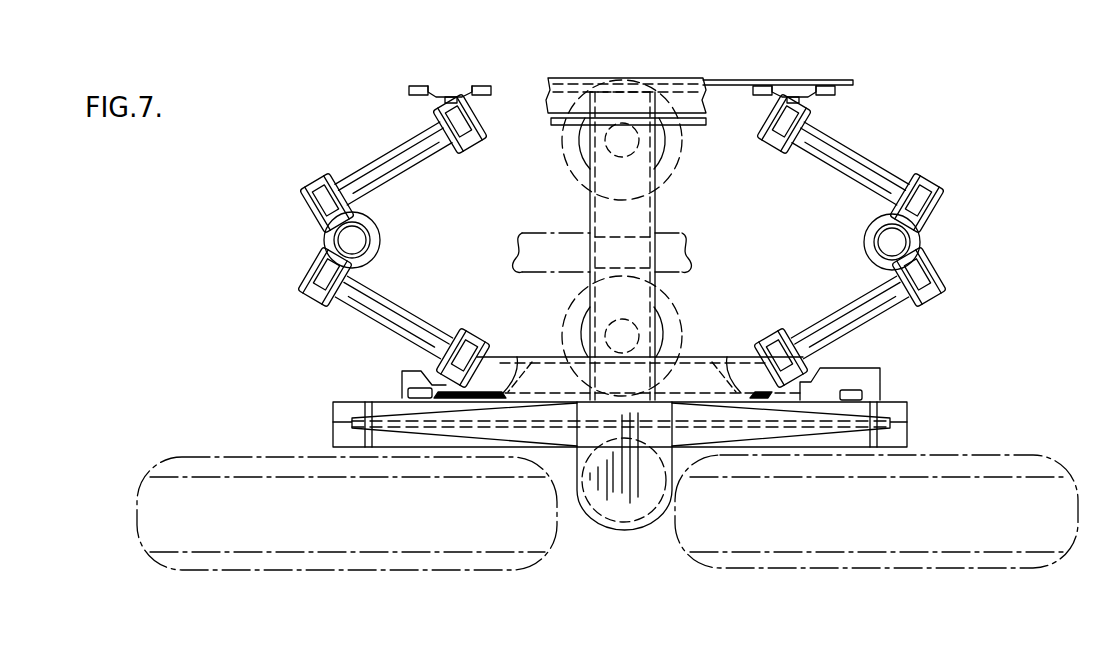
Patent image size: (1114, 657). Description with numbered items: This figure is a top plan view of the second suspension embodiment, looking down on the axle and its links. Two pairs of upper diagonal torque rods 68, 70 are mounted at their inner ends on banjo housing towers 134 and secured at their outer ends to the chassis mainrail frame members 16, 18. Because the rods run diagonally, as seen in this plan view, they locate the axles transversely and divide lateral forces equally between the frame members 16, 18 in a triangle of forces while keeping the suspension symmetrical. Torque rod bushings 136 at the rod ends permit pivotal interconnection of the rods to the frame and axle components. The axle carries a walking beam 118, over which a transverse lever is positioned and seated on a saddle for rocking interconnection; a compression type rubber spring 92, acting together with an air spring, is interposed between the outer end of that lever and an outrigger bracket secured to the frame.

The frame member 16 is at (748, 84).
The frame member 18 is at (880, 372).
The upper diagonal torque rod 68 is at (877, 172).
The upper diagonal torque rod 70 is at (396, 160).
The rubber spring 92 is at (596, 498).
The walking beam 118 is at (703, 440).
The banjo housing tower 134 is at (345, 241).
The torque rod bushing 136 is at (768, 140).